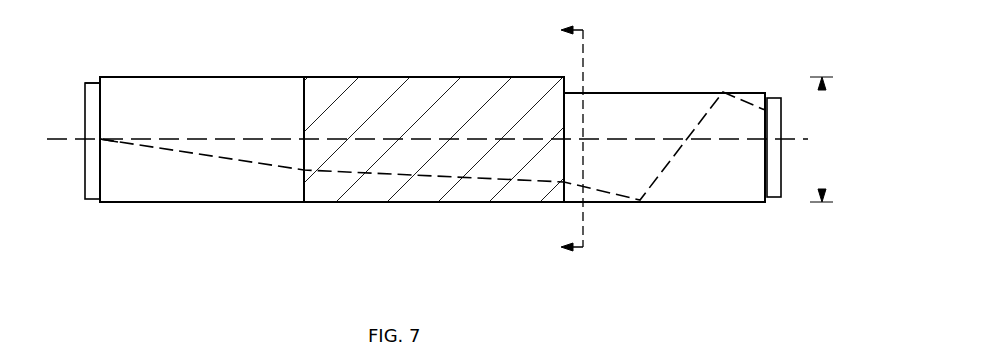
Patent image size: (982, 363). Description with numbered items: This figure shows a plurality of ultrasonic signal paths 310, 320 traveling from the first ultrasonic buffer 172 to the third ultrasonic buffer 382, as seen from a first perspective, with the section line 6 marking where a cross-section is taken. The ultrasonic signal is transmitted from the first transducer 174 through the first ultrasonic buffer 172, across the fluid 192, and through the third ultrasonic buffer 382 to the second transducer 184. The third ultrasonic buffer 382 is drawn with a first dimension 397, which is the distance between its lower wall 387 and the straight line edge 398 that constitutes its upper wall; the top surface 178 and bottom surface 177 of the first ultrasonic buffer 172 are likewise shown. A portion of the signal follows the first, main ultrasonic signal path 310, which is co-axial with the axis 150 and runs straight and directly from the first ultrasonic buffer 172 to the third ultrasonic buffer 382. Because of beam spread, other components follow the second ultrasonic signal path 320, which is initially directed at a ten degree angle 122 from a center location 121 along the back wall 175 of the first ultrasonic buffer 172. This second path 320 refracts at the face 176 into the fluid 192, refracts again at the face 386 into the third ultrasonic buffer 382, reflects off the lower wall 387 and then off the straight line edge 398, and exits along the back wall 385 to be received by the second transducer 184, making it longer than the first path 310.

The section line 6- 6 is at (564, 140).
The center location 121 is at (105, 131).
The 10 degree angle 122 is at (208, 153).
The axis 150 is at (800, 140).
The first ultrasonic buffer 172 is at (138, 192).
The first transducer 174 is at (92, 117).
The back wall 175 is at (91, 80).
The face 176 is at (313, 198).
The bottom surface of first light guide 177 is at (220, 204).
The top surface of first light guide 178 is at (186, 66).
The second transducer 184 is at (773, 200).
The fluid 192 is at (312, 88).
The first ultrasonic signal path 310 is at (360, 137).
The second ultrasonic signal path 320 is at (420, 187).
The third ultrasonic buffer 382 is at (707, 190).
The back wall 385 is at (776, 97).
The face 386 is at (556, 200).
The lower wall 387 is at (613, 205).
The first dimension 397 is at (823, 123).
The straight line edge 398 is at (640, 92).